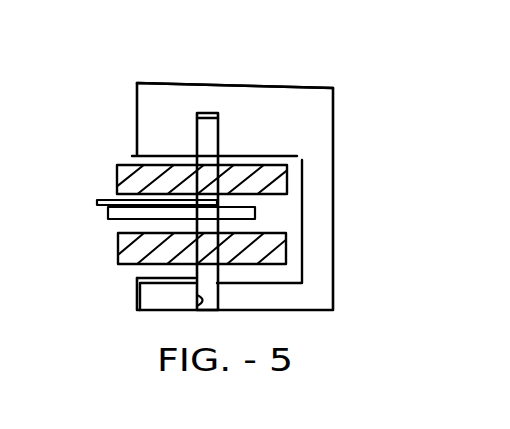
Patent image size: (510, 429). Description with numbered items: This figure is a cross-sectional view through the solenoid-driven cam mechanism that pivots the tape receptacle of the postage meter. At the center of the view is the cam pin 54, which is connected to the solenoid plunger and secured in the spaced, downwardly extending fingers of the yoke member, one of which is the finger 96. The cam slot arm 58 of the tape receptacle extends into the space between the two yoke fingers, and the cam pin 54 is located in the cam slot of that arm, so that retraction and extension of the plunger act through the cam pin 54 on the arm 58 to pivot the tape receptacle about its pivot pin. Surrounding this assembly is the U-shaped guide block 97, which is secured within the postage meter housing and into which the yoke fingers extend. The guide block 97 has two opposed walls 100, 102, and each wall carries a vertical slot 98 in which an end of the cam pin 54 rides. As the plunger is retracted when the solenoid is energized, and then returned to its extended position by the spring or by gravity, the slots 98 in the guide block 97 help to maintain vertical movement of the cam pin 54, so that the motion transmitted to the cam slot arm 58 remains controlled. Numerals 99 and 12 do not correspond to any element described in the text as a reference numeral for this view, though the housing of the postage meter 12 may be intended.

The opposed wall 100 is at (253, 99).
The U-shaped guide block 97 is at (321, 112).
The inner housing / upper magnet plate 99 is at (302, 174).
The finger 96 is at (285, 240).
The cam slot arm 58 is at (103, 206).
The cam pin 54 is at (218, 139).
The vertical slot 98 is at (197, 137).
The opposed wall 102 is at (247, 297).
The shaft end 12 is at (200, 311).